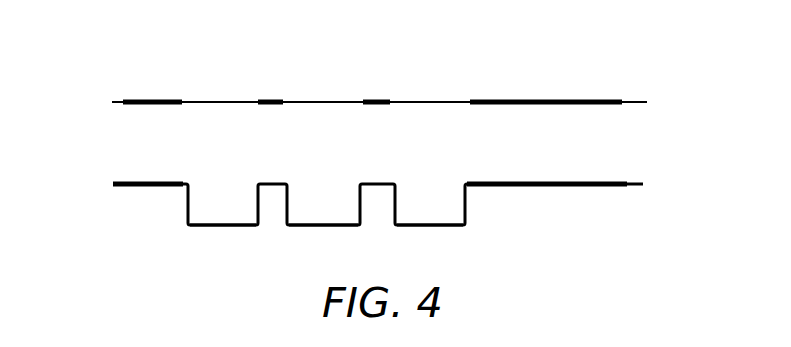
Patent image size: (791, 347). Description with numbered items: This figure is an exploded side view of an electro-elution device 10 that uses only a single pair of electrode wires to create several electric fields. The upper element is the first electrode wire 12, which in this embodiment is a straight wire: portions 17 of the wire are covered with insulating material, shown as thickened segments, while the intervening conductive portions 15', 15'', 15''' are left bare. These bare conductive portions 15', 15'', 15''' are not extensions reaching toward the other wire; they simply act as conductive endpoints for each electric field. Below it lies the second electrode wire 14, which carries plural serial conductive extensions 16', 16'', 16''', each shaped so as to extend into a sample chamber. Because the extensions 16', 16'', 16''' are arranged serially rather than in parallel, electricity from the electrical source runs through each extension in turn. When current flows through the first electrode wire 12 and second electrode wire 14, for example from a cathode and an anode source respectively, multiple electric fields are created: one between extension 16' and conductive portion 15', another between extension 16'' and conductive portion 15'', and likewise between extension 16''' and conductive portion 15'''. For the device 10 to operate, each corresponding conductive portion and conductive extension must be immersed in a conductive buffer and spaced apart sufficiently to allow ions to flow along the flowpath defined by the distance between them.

The electro-elution device 10 is at (143, 73).
The first electrode wire 12 is at (633, 98).
The second electrode wire 14 is at (632, 186).
The conductive portion 15' is at (433, 76).
The conductive portion 15'' is at (327, 77).
The conductive portion 15''' is at (230, 76).
The conductive extension 16' is at (441, 248).
The conductive extension 16'' is at (336, 248).
The conductive extension 16''' is at (241, 248).
The insulated portion 17 is at (145, 103).